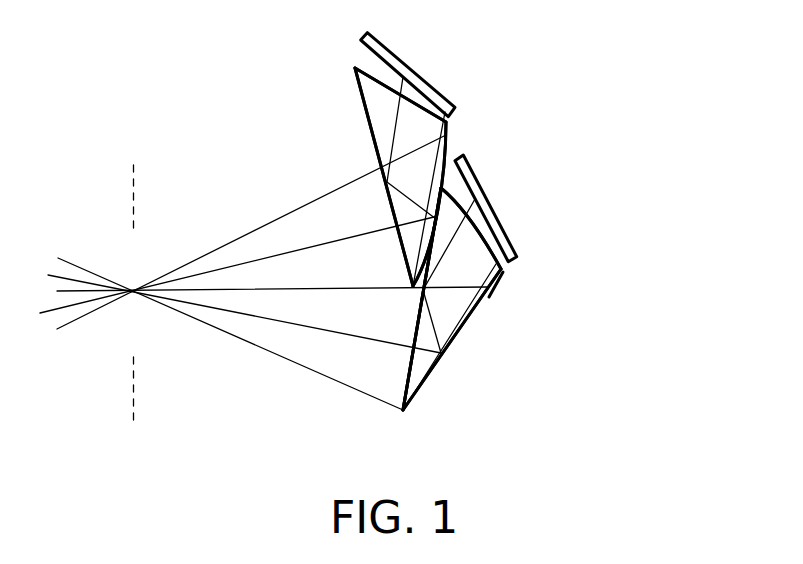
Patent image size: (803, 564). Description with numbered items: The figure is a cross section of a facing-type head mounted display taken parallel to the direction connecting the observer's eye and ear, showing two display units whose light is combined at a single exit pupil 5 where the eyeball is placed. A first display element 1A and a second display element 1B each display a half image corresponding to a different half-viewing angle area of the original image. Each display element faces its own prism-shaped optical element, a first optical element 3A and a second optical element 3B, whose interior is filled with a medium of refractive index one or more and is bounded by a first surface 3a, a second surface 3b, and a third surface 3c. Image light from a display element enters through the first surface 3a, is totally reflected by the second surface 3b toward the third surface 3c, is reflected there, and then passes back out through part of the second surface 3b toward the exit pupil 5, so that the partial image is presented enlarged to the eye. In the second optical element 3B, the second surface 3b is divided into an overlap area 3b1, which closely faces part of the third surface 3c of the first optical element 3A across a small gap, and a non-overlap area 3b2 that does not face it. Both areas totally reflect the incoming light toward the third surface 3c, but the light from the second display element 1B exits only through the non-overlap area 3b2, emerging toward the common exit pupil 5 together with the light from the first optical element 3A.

The first display element 1A is at (389, 47).
The second display element 1B is at (466, 158).
The first optical element 3A is at (387, 118).
The second optical element 3B is at (453, 305).
The first surface 3a is at (369, 67).
The second surface 3b is at (390, 205).
The overlap area 3b1 is at (421, 242).
The non-overlap area 3b2 is at (420, 331).
The third surface 3c is at (448, 150).
The exit pupil 5 is at (116, 248).